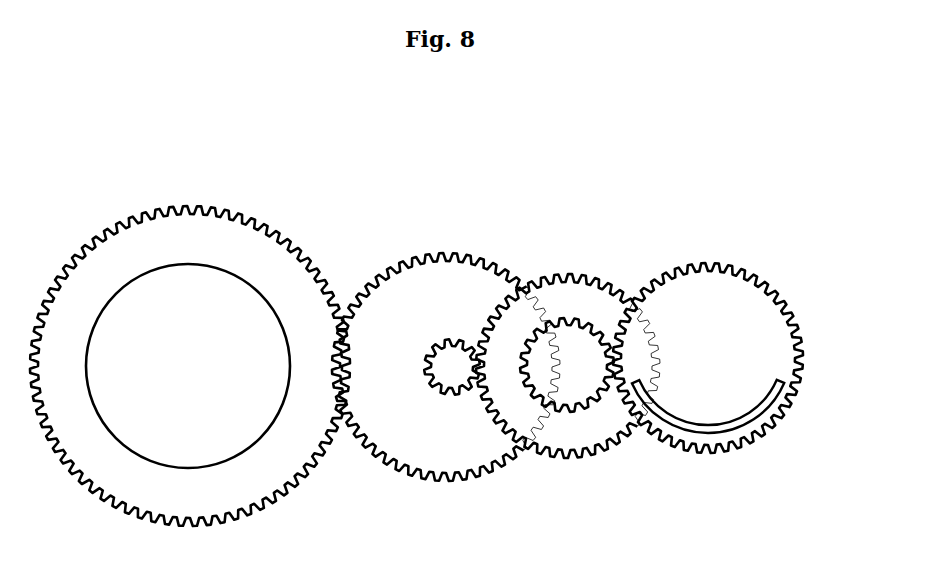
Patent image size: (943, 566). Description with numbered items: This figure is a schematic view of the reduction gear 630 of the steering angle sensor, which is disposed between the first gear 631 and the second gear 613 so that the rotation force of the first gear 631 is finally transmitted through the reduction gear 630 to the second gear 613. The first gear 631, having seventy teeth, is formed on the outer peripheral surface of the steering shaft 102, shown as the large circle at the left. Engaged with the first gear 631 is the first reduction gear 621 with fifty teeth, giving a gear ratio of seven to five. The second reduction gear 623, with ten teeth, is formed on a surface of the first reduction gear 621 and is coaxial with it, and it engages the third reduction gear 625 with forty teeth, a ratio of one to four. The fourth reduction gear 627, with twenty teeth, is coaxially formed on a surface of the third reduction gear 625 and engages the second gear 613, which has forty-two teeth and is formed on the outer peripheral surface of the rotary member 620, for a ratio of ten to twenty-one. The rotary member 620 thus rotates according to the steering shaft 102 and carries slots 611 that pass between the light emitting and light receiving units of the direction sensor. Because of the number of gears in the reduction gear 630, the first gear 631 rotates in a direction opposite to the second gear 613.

The first gear 631 is at (187, 232).
The steering shaft 102 is at (210, 285).
The reduction gear 630 is at (633, 190).
The first reduction gear 621 is at (417, 298).
The second reduction gear 623 is at (449, 338).
The third reduction gear 625 is at (570, 275).
The fourth reduction gear 627 is at (580, 362).
The second gear 613 is at (717, 268).
The rotary member 620 is at (717, 357).
The slots 611 is at (787, 403).